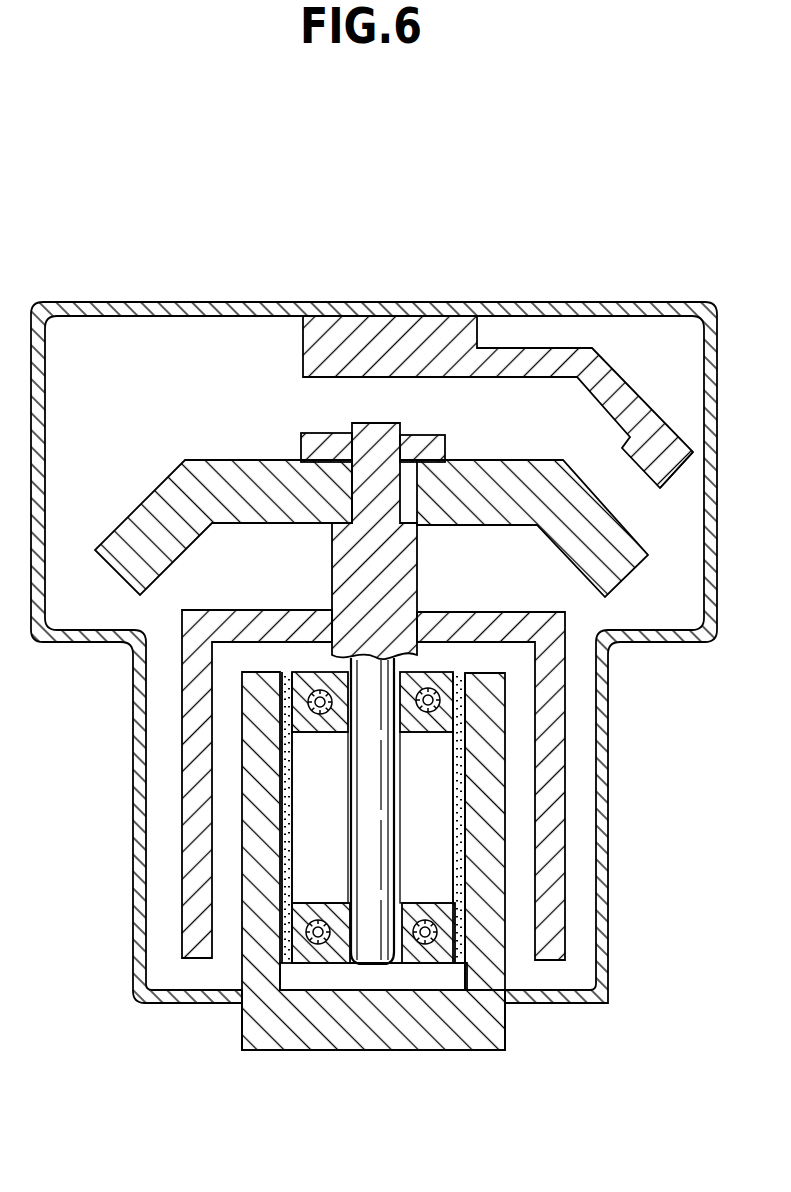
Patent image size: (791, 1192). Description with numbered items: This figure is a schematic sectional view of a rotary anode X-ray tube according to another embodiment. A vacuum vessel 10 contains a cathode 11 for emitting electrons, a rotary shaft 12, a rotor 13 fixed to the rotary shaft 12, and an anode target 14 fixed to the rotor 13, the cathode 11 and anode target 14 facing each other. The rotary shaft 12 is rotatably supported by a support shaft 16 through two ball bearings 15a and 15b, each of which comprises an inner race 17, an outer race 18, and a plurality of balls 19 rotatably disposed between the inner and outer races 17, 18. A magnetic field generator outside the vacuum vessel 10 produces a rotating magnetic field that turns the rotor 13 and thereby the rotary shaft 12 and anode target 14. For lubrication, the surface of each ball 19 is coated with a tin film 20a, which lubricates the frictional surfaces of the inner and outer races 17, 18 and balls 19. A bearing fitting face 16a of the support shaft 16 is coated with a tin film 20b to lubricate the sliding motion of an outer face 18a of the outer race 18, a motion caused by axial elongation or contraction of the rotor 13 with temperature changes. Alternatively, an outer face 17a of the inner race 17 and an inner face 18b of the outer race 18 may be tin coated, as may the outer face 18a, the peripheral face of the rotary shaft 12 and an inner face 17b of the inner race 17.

The vacuum vessel 10 is at (602, 312).
The cathode 11 is at (653, 432).
The rotary shaft 12 is at (404, 780).
The rotor 13 is at (555, 650).
The anode target 14 is at (663, 475).
The ball bearing 15a is at (315, 742).
The ball bearing 15b is at (313, 893).
The support shaft 16 is at (503, 1017).
The bearing fitting face 16a is at (467, 967).
The inner race 17 is at (407, 731).
The outer face of the inner race 17a is at (433, 950).
The inner face of the inner race 17b is at (407, 963).
The outer race 18 is at (472, 697).
The outer face of the outer race 18a is at (243, 1010).
The inner face of the outer race 18b is at (485, 975).
The ball 19 is at (320, 920).
The tin film 20a is at (422, 681).
The tin film 20b is at (455, 817).